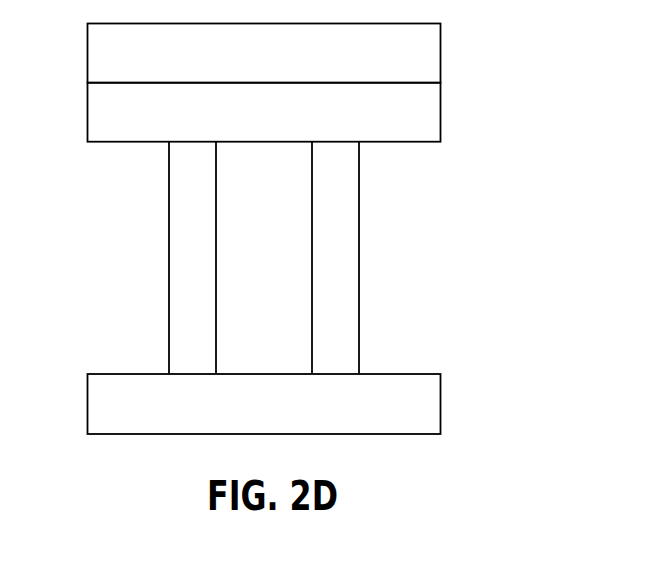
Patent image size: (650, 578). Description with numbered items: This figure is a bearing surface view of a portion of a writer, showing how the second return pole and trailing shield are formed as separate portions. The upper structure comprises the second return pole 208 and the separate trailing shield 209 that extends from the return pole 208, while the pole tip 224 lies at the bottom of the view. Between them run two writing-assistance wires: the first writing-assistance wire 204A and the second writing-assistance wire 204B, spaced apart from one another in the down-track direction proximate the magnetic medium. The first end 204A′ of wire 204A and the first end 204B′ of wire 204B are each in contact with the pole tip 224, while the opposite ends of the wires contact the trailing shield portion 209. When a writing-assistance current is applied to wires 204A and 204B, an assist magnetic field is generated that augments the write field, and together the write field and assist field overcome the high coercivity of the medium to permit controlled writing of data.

The second return pole 208 is at (423, 50).
The trailing shield 209 is at (423, 108).
The first writing-assistance wire 204A is at (193, 268).
The first end of wire 204A 204A′ is at (170, 373).
The second writing-assistance wire 204B is at (340, 313).
The first end of wire 204B 204B′ is at (359, 373).
The pole tip 224 is at (423, 403).